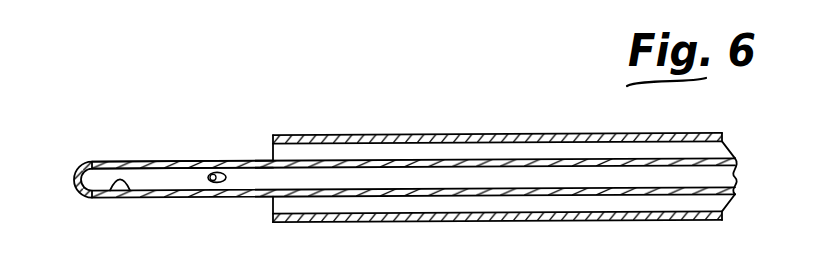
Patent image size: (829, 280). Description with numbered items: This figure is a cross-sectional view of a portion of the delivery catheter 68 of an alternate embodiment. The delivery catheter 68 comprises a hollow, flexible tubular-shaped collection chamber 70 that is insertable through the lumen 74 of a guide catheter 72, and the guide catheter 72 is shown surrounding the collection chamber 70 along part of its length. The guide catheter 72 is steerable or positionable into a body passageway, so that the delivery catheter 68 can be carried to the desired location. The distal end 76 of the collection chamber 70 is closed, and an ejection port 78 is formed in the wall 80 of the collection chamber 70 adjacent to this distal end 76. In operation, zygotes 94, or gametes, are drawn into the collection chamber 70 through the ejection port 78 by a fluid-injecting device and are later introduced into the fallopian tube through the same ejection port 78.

The delivery catheter 68 is at (437, 92).
The collection chamber 70 is at (172, 181).
The guide catheter 72 is at (502, 134).
The lumen 74 is at (282, 155).
The distal end 76 is at (77, 166).
The ejection port 78 is at (150, 161).
The wall 80 is at (112, 191).
The zygotes 94 is at (212, 185).